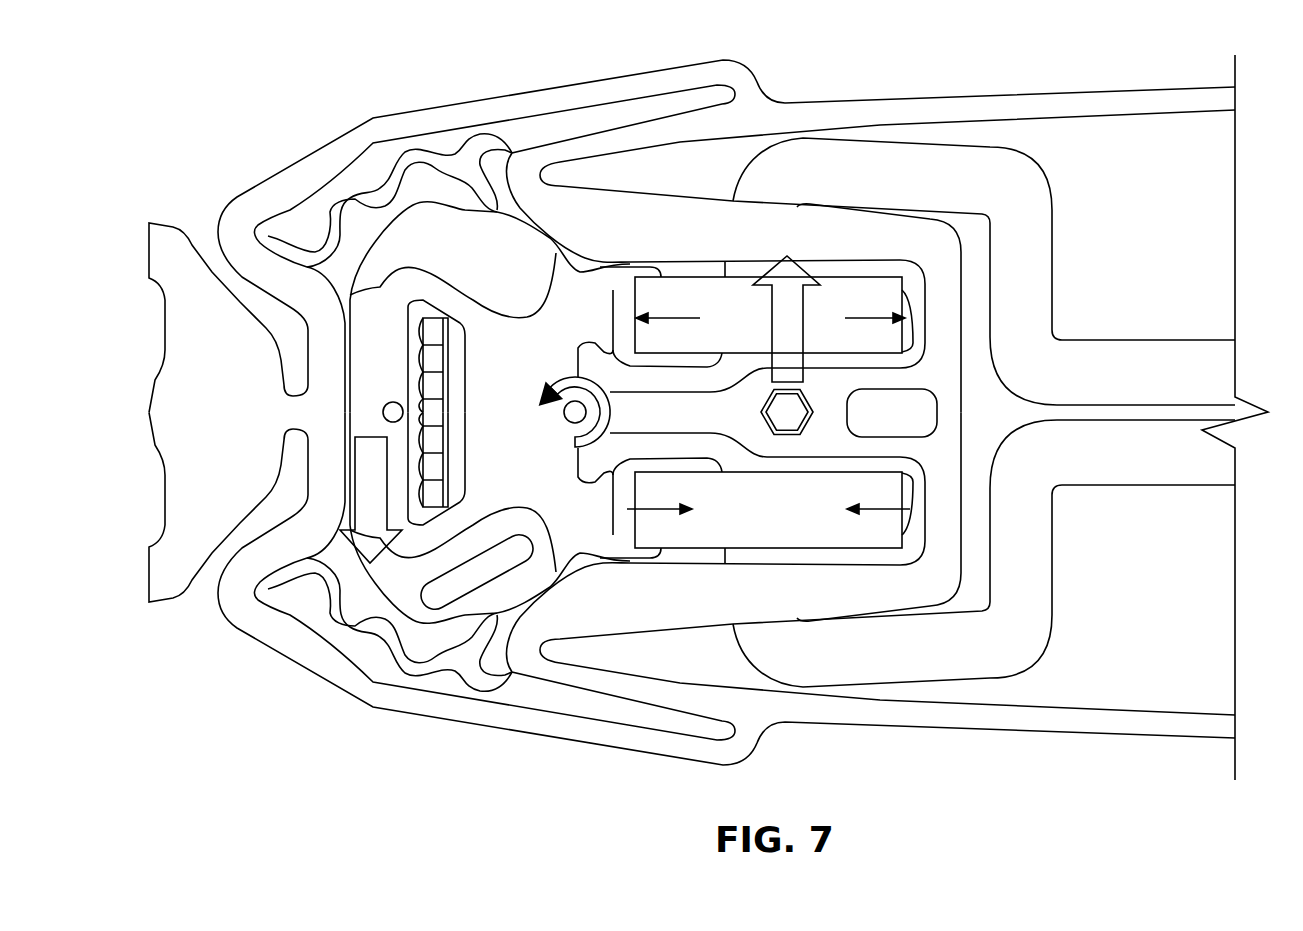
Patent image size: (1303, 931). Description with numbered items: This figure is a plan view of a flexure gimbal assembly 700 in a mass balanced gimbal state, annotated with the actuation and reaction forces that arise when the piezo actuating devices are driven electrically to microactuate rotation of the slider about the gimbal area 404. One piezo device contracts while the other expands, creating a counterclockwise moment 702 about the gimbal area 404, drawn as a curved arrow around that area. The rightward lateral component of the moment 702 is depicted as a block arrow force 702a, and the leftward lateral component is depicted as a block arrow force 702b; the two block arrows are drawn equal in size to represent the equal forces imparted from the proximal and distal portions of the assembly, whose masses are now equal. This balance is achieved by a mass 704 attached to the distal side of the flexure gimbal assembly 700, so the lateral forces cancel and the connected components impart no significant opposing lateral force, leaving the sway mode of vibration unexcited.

The flexure gimbal assembly 700 is at (350, 68).
The moment 702 is at (608, 412).
The force 702a is at (776, 350).
The force 702b is at (361, 512).
The gimbal area 404 is at (563, 417).
The mass 704 is at (383, 418).